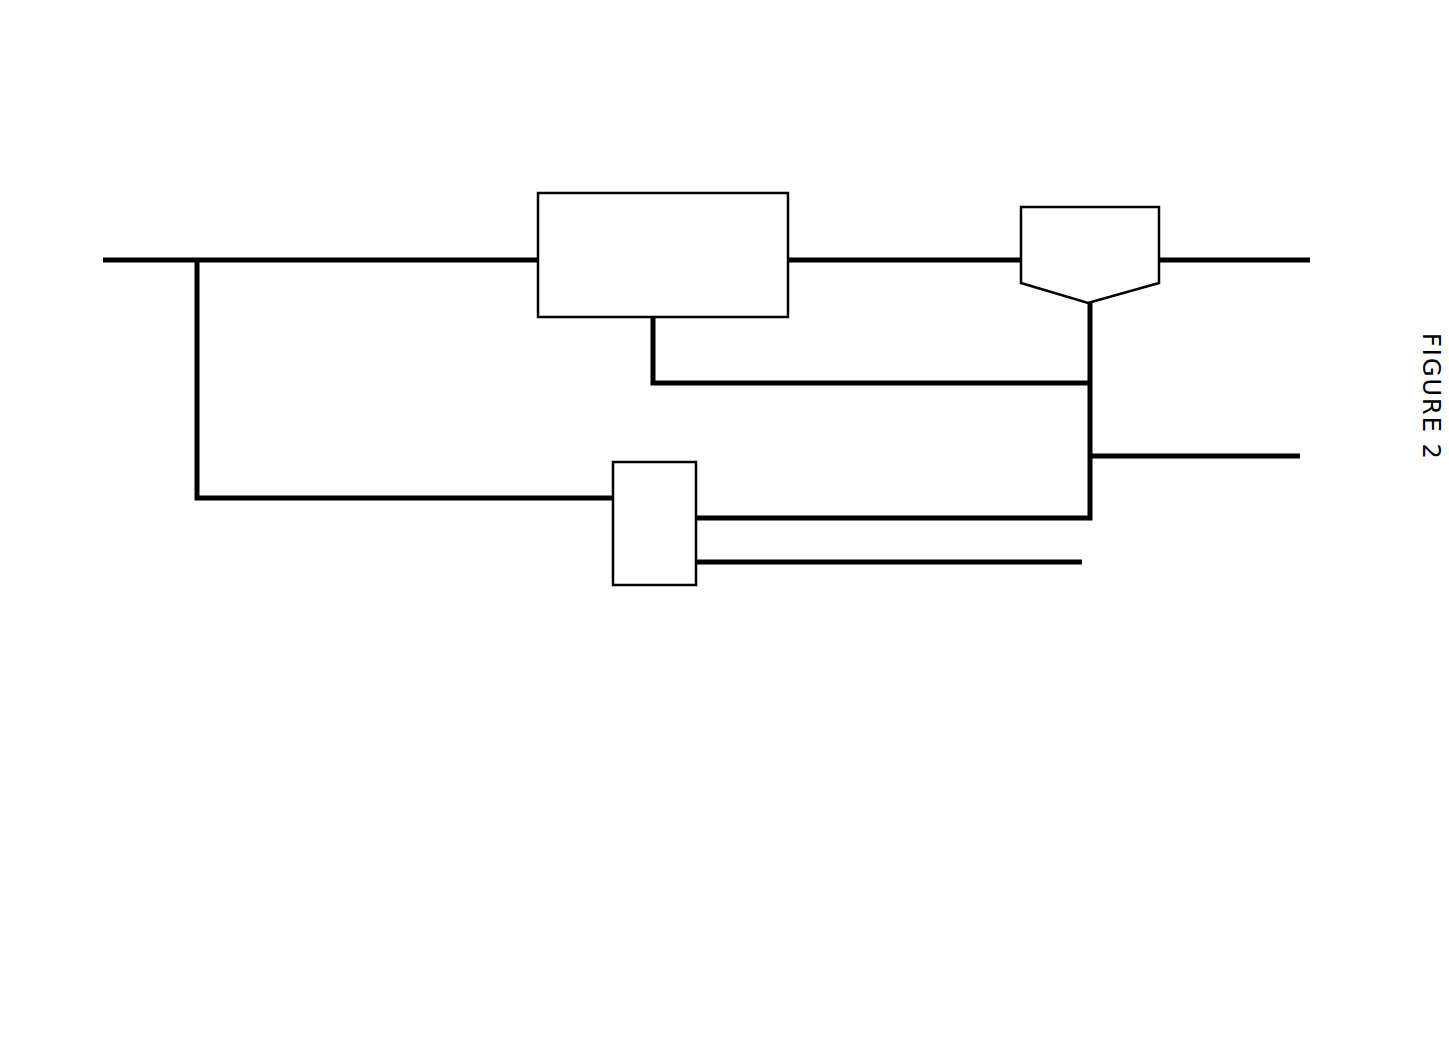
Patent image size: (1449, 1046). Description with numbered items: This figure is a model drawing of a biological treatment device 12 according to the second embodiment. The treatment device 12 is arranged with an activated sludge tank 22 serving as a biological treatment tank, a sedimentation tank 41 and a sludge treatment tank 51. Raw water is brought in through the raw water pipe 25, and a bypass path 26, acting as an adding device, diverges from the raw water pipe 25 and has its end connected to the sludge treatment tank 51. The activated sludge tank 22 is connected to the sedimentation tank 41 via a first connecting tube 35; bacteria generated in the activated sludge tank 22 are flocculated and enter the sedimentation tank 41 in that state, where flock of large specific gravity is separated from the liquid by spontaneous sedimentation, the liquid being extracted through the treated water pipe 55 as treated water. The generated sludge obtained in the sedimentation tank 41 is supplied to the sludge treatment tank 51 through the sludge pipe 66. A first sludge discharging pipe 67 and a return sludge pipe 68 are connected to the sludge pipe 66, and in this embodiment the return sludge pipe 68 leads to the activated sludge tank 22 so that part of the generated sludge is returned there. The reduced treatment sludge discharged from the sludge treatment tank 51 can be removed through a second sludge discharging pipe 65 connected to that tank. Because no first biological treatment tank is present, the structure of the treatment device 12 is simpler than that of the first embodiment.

The treatment device 12 is at (730, 828).
The activated sludge tank 22 is at (668, 193).
The raw water pipe 25 is at (150, 263).
The bypass path 26 is at (391, 495).
The first connecting tube 35 is at (899, 264).
The sedimentation tank 41 is at (1081, 207).
The sludge treatment tank 51 is at (660, 586).
The treated water pipe 55 is at (1257, 264).
The second sludge discharging pipe 65 is at (894, 565).
The sludge pipe 66 is at (1087, 437).
The first sludge discharging pipe 67 is at (1259, 453).
The return sludge pipe 68 is at (898, 386).